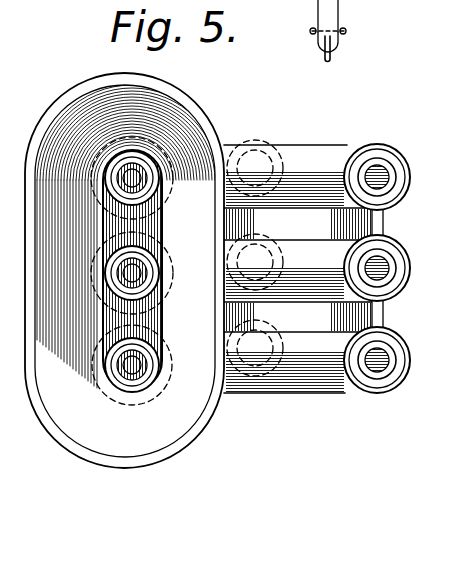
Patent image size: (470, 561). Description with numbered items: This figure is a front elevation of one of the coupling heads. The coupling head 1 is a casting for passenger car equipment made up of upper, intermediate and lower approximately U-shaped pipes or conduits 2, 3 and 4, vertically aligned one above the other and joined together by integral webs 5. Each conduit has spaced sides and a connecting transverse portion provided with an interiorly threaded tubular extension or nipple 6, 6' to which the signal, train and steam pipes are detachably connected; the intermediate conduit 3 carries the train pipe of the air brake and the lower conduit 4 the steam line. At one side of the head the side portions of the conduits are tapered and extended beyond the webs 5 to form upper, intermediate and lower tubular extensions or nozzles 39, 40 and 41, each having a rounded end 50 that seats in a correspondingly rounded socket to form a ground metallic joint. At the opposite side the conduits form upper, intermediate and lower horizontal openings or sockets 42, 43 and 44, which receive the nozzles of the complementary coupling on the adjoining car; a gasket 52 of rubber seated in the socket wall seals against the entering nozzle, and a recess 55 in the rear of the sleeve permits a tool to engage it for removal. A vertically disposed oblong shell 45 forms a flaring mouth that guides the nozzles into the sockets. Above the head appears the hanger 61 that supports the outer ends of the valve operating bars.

The coupling head 1 is at (401, 268).
The upper pipe or conduit 2 is at (298, 176).
The intermediate pipe or conduit 3 is at (298, 271).
The lower pipe or conduit 4 is at (298, 361).
The integral webs 5 is at (299, 270).
The tubular extension or nipple 6 is at (255, 200).
The hidden boss 6' is at (255, 340).
The upper tubular extension or nozzle 39 is at (407, 180).
The intermediate tubular extension or nozzle 40 is at (407, 278).
The lower tubular extension or nozzle 41 is at (405, 371).
The upper horizontal opening or socket 42 is at (160, 175).
The intermediate horizontal opening or socket 43 is at (162, 258).
The lower horizontal opening or socket 44 is at (150, 380).
The oblong shell 45 is at (193, 440).
The end of tubular extension or nozzle 50 is at (362, 166).
The gasket 52 is at (143, 190).
The recess 55 is at (35, 132).
The hanger 61 is at (346, 31).